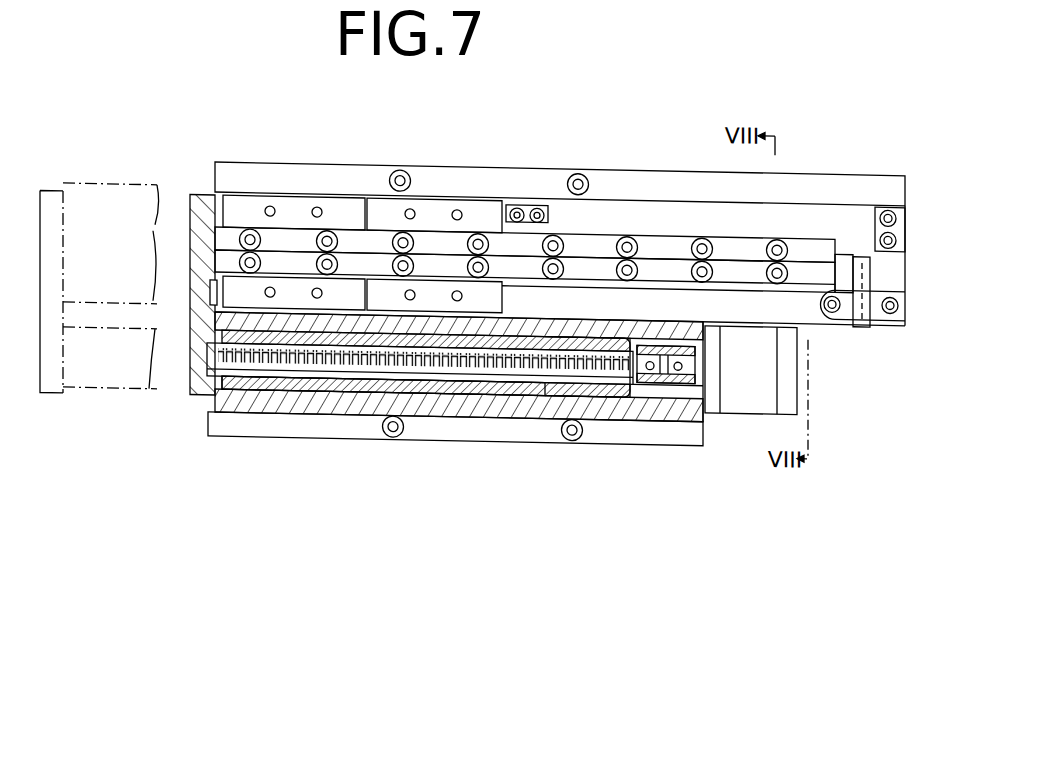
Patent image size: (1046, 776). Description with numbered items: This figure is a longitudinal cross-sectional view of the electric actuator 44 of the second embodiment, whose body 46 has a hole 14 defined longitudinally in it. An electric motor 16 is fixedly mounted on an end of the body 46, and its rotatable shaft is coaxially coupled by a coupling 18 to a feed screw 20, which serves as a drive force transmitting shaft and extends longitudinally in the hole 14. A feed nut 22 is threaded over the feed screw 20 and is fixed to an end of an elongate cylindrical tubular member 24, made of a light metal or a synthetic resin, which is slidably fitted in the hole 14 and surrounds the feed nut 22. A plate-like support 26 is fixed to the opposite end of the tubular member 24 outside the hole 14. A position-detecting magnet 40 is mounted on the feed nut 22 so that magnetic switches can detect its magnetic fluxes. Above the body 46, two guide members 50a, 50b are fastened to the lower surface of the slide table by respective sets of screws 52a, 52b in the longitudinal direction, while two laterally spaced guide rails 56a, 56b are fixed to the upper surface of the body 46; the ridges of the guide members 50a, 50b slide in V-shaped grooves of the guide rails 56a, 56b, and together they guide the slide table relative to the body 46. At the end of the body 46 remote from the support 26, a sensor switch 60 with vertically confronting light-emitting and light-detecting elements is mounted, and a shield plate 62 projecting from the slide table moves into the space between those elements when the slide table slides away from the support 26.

The hole 14 is at (685, 386).
The electric motor 16 is at (738, 392).
The coupling 18 is at (653, 381).
The feed screw 20 is at (478, 368).
The feed nut 22 is at (627, 352).
The tubular member 24 is at (333, 388).
The support 26 is at (190, 389).
The position-detecting magnet 40 is at (615, 385).
The electric actuator 44 is at (693, 86).
The body 46 is at (620, 177).
The guide member 50a is at (752, 266).
The guide member 50b is at (810, 236).
The screws 52a is at (300, 253).
The screws 52b is at (343, 229).
The guide rail 56a is at (433, 289).
The guide rail 56b is at (477, 205).
The sensor switch 60 is at (848, 287).
The shield plate 62 is at (843, 245).